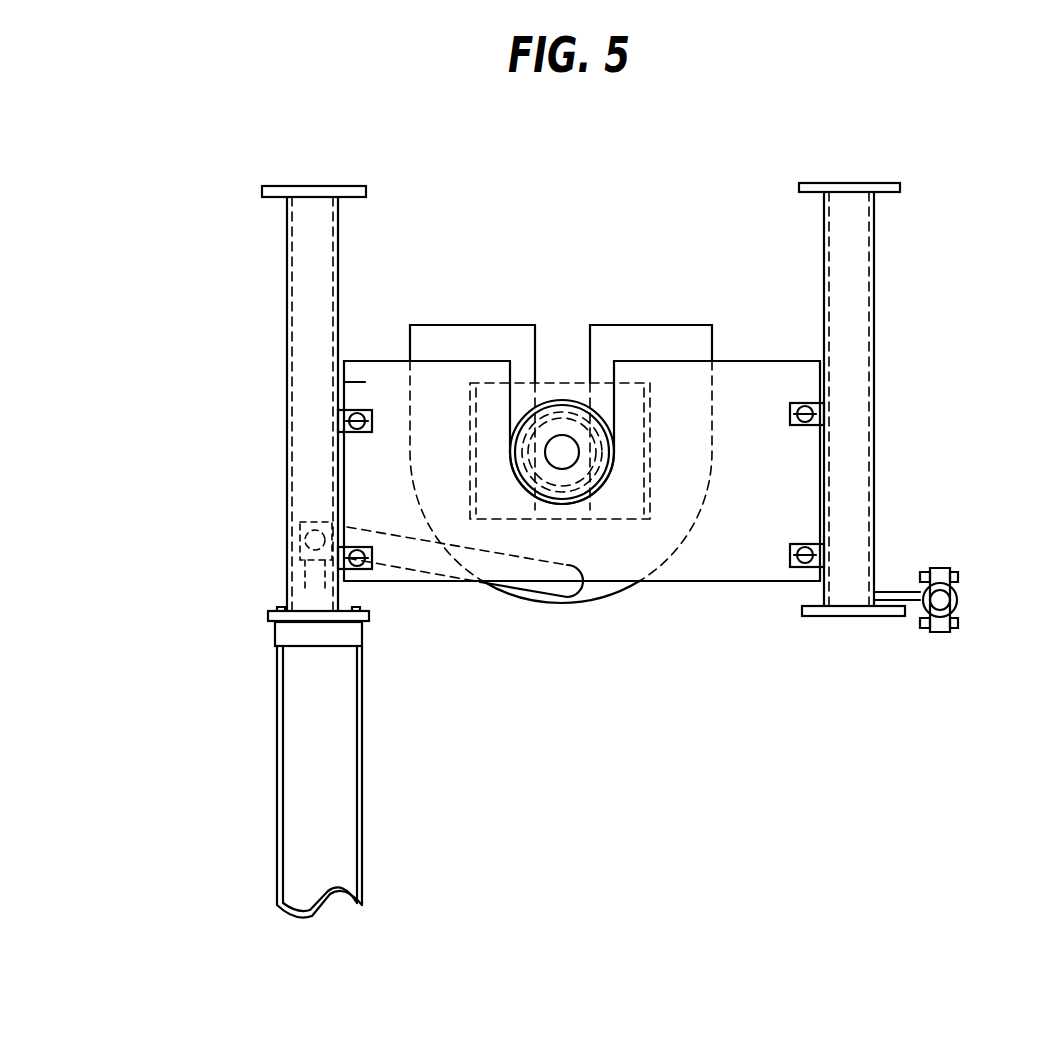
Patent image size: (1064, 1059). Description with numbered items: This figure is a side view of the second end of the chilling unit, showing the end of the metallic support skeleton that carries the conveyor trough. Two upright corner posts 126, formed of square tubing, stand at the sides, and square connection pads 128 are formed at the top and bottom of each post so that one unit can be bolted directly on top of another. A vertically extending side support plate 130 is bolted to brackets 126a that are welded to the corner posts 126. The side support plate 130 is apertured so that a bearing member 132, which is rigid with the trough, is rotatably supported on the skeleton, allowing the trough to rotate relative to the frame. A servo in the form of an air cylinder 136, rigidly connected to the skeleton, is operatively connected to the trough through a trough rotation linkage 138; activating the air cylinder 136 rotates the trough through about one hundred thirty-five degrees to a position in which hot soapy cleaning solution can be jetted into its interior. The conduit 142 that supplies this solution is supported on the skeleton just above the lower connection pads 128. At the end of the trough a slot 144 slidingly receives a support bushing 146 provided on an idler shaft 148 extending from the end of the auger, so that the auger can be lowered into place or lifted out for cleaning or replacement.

The corner post 126 is at (306, 296).
The bracket 126a is at (345, 558).
The connection pad 128 is at (310, 186).
The side support plate 130 is at (362, 381).
The bearing member 132 is at (552, 400).
The air cylinder 136 is at (312, 757).
The trough rotation linkage 138 is at (530, 592).
The conduit 142 is at (960, 600).
The slot 144 is at (588, 345).
The support bushing 146 is at (570, 494).
The idler shaft 148 is at (565, 460).